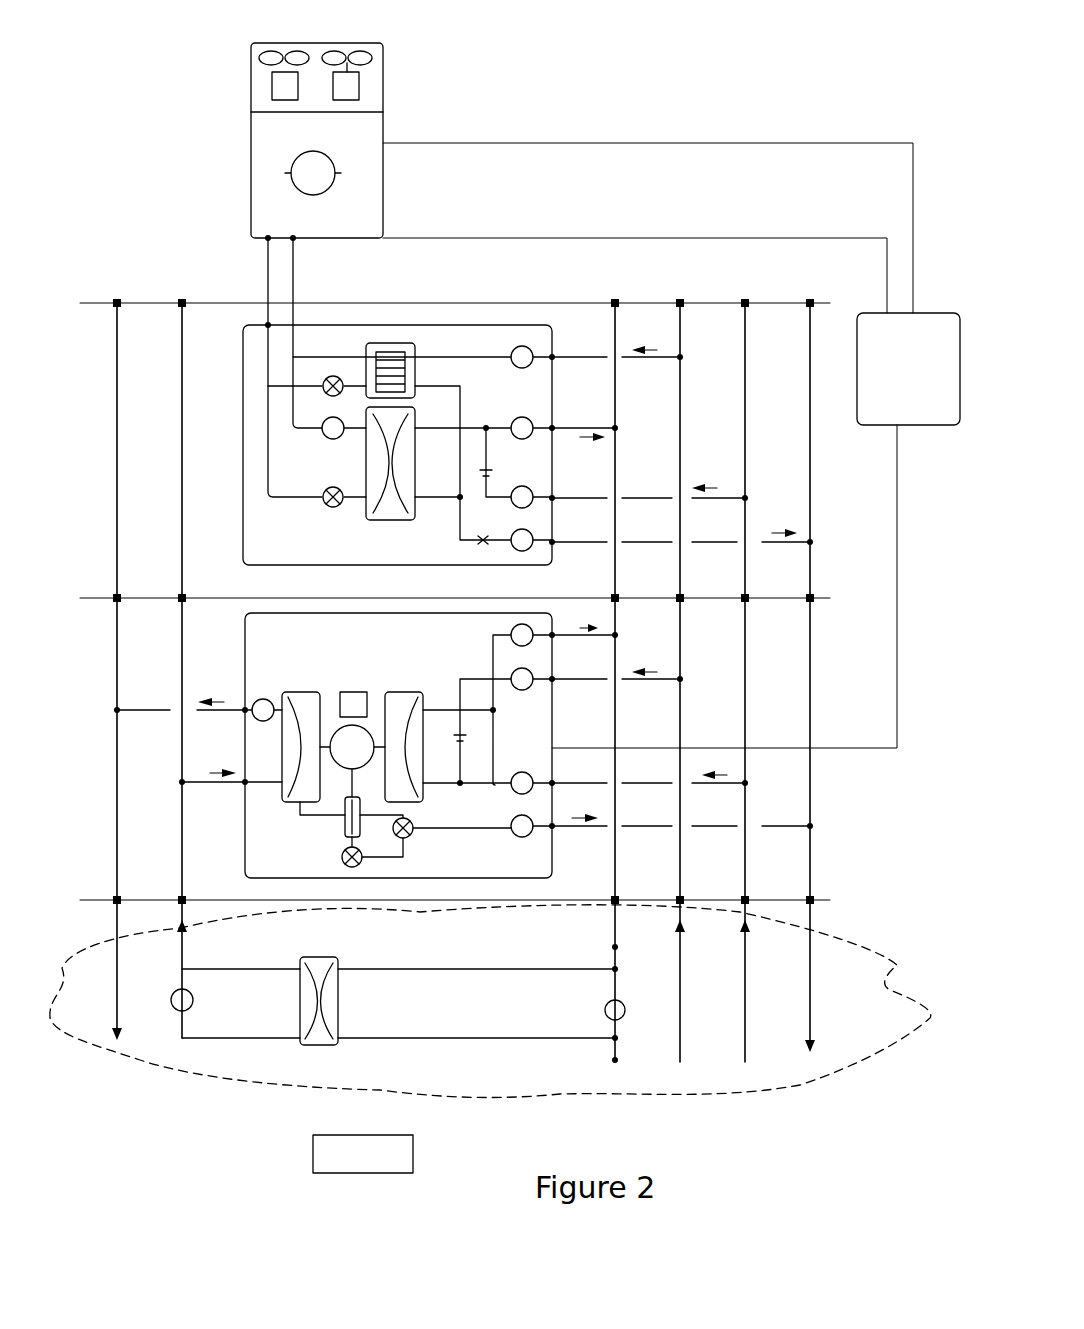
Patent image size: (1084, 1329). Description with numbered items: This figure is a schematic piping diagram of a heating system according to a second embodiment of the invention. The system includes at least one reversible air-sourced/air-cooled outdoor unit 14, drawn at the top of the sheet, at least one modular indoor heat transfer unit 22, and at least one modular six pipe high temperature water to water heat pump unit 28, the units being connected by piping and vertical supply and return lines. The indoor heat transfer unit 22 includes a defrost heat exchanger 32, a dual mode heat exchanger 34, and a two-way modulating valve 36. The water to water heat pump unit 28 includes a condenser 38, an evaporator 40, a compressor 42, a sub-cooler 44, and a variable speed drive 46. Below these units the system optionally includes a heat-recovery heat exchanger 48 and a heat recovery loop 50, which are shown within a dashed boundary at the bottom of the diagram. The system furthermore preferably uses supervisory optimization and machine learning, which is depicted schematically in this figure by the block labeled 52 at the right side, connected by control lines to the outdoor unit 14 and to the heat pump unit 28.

The outdoor unit 14 is at (255, 152).
The variable speed drive 46 is at (273, 92).
The modular indoor heat transfer unit 22 is at (413, 377).
The defrost heat exchanger 32 is at (392, 330).
The dual mode heat exchanger 34 is at (420, 408).
The two-way modulating valve 36 is at (530, 345).
The supervisory optimization and machine learning 52 is at (908, 369).
The modular six pipe high temperature water to water heat pump unit 28 is at (425, 728).
The condenser 38 is at (292, 680).
The evaporator 40 is at (407, 680).
The compressor 42 is at (430, 788).
The sub-cooler 44 is at (363, 830).
The heat-recovery heat exchanger 48 is at (302, 1050).
The heat recovery loop 50 is at (488, 1007).